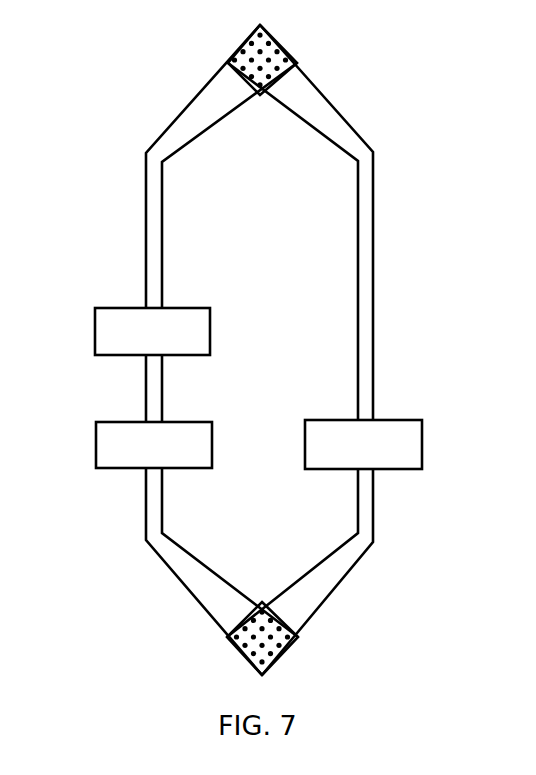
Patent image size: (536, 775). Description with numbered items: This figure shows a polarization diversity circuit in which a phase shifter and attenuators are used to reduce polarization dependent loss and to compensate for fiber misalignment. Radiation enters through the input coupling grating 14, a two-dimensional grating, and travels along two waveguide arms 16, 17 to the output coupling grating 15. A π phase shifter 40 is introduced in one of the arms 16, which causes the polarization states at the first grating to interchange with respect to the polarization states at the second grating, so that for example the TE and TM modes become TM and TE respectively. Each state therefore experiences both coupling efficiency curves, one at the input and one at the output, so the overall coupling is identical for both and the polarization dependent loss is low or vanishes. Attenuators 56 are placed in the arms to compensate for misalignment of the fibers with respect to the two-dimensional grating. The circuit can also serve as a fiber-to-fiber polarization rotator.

The input coupling grating 14 is at (262, 630).
The output coupling grating 15 is at (260, 60).
The waveguide arm 16 is at (192, 120).
The waveguide arm 17 is at (325, 115).
The phase shifter 40 is at (127, 345).
The attenuator 56 is at (132, 452).